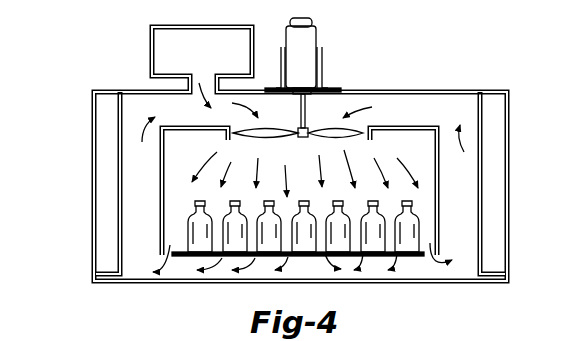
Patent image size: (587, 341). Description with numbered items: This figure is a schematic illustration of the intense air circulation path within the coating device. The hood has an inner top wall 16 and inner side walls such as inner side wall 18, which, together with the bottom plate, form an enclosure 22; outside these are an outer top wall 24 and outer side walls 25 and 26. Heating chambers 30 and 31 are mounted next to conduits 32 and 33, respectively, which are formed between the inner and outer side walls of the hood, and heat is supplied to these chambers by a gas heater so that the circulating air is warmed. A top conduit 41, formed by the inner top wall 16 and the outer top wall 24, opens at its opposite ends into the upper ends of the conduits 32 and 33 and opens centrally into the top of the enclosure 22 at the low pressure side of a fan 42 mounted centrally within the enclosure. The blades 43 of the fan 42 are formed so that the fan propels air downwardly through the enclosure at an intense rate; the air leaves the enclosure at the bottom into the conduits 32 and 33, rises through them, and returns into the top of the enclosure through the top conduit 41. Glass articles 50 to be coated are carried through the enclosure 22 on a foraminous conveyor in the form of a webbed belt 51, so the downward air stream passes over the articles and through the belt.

The inner top wall 16 is at (405, 123).
The inner side wall 18 is at (463, 91).
The enclosure 22 is at (187, 145).
The outer top wall 24 is at (440, 141).
The outer side wall 25 is at (118, 118).
The outer side wall 26 is at (482, 118).
The heating chamber 30 is at (100, 247).
The heating chamber 31 is at (502, 215).
The conduit 32 is at (141, 249).
The conduit 33 is at (467, 250).
The top conduit 41 is at (393, 100).
The fan 42 is at (310, 44).
The fan blades 43 is at (331, 127).
The glass articles 50 is at (235, 240).
The webbed belt 51 is at (402, 254).